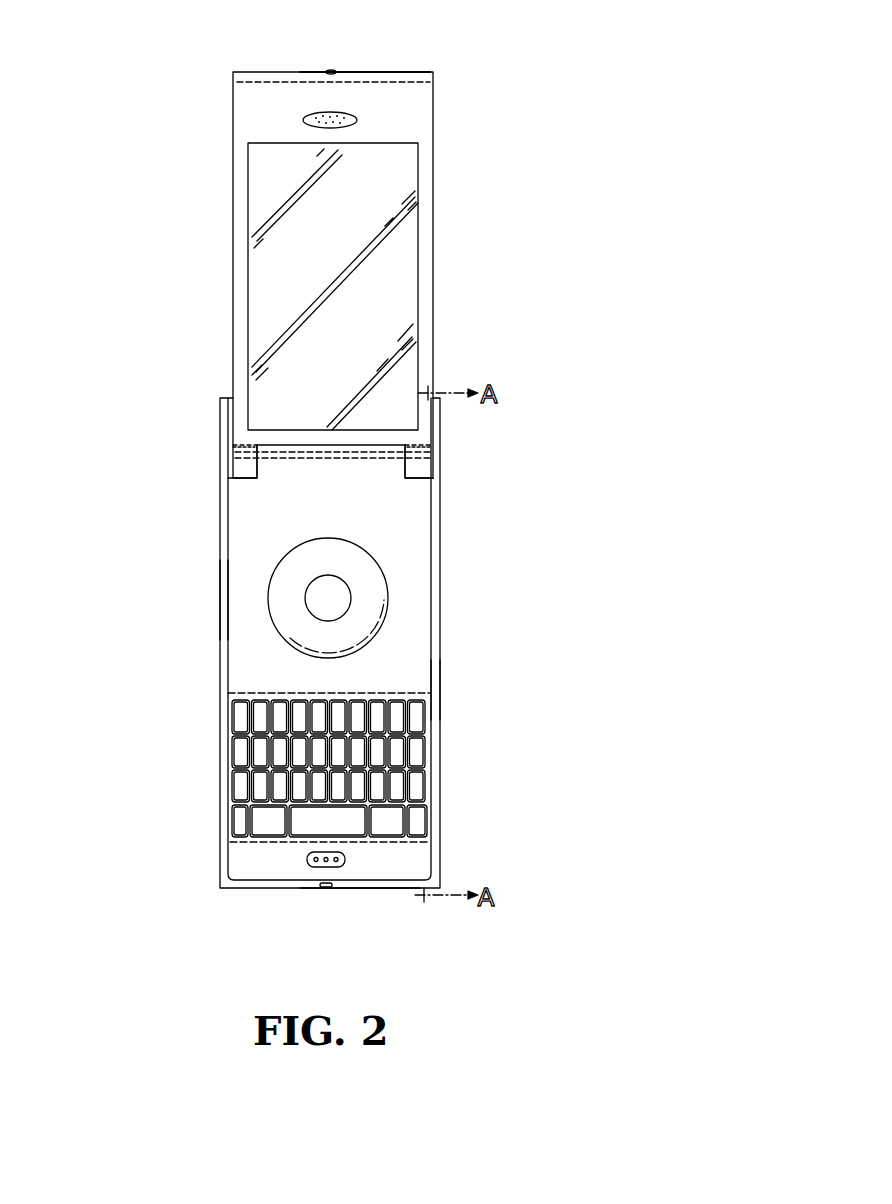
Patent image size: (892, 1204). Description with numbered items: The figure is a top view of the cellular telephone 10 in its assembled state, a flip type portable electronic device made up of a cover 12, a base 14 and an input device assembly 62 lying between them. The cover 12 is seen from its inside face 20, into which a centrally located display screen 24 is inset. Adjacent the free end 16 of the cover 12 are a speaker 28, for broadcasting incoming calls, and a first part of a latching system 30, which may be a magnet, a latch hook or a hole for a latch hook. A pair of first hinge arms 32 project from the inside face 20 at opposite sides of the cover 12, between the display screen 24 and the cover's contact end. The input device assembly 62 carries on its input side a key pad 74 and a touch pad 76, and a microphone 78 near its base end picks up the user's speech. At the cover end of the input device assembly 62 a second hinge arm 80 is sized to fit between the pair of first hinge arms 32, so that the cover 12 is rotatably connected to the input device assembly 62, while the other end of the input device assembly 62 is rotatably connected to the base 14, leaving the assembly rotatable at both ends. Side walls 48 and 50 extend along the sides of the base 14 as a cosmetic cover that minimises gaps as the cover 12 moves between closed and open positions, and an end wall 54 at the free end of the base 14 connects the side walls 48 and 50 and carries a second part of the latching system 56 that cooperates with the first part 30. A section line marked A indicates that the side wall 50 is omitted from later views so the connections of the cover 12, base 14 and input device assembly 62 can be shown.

The cellular telephone 10 is at (578, 161).
The cover 12 is at (435, 125).
The base 14 is at (440, 583).
The free end 16 is at (400, 72).
The inside face 20 is at (425, 215).
The display screen 24 is at (262, 282).
The speaker 28 is at (308, 117).
The first part of latching system 30 is at (333, 71).
The first hinge arms 32 is at (418, 462).
The side wall 48 is at (220, 600).
The side wall 50 is at (435, 688).
The end wall 54 is at (358, 888).
The second part of latching system 56 is at (327, 888).
The input device assembly 62 is at (252, 655).
The key pad 74 is at (227, 737).
The touch pad 76 is at (280, 562).
The microphone 78 is at (307, 857).
The second hinge arm 80 is at (305, 475).